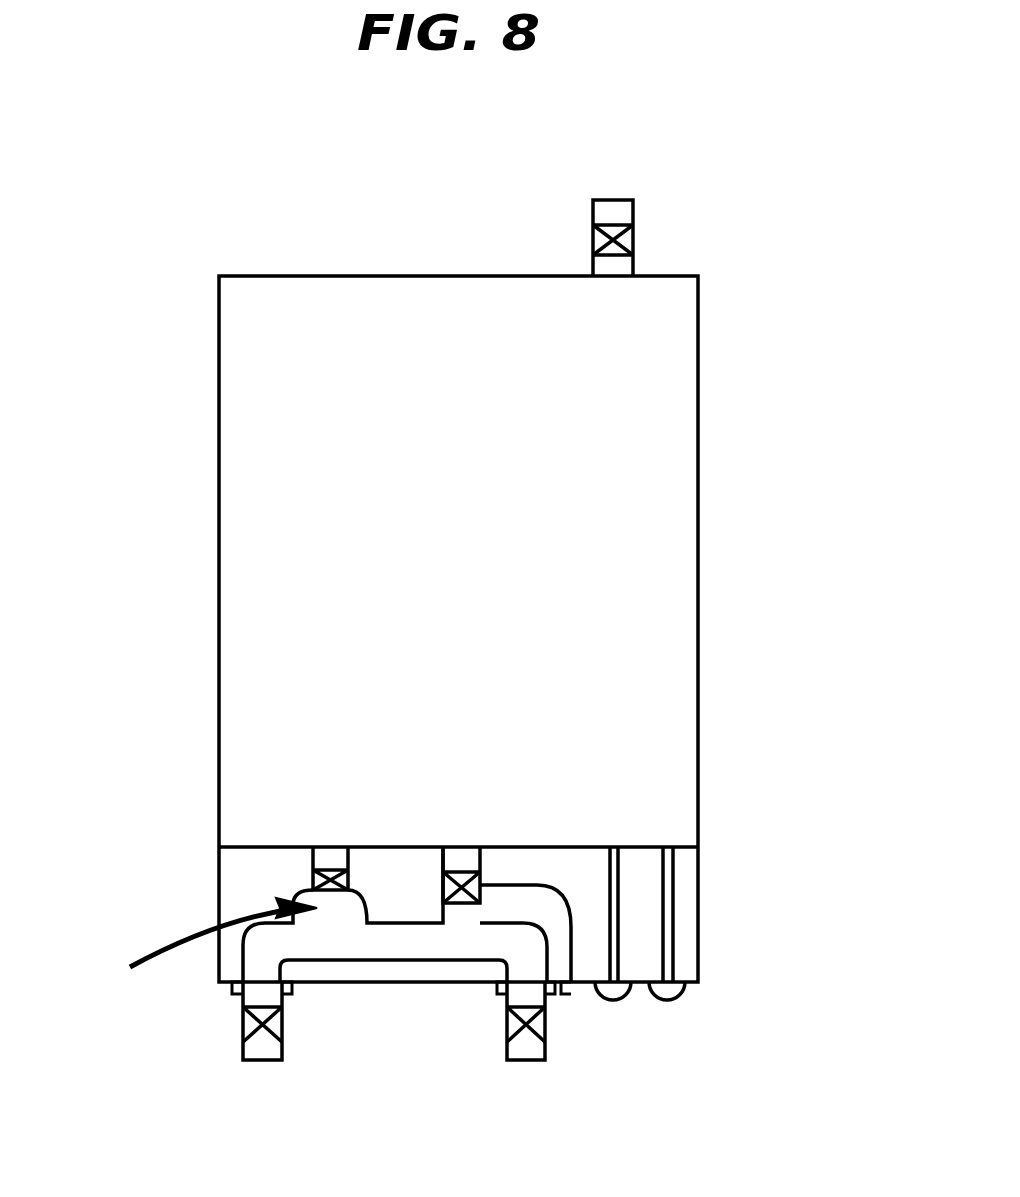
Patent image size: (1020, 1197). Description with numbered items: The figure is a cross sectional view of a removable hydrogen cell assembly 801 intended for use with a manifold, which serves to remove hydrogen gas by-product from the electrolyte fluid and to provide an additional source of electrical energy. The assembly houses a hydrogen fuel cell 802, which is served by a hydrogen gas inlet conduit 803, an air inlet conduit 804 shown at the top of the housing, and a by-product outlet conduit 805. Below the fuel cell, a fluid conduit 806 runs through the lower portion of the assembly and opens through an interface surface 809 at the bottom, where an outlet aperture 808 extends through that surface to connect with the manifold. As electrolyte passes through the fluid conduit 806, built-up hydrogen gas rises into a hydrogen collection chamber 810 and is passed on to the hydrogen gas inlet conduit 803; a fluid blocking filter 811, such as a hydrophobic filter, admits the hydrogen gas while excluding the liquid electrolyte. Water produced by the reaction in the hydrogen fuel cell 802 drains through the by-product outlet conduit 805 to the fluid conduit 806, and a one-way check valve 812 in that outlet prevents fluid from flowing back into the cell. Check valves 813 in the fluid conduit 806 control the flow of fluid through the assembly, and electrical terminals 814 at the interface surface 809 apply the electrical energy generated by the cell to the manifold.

The hydrogen cell assembly 801 is at (698, 576).
The hydrogen fuel cell 802 is at (253, 752).
The hydrogen gas inlet conduit 803 is at (313, 865).
The air inlet conduit 804 is at (633, 213).
The by-product outlet conduit 805 is at (480, 857).
The fluid conduit 806 is at (347, 960).
The outlet aperture 808 is at (242, 1045).
The interface surface 809 is at (698, 983).
The hydrogen collection chamber 810 is at (197, 948).
The fluid blocking filter 811 is at (313, 880).
The one-way check valve 812 is at (569, 990).
The check valves 813 is at (283, 1023).
The electrical terminals 814 is at (668, 1003).